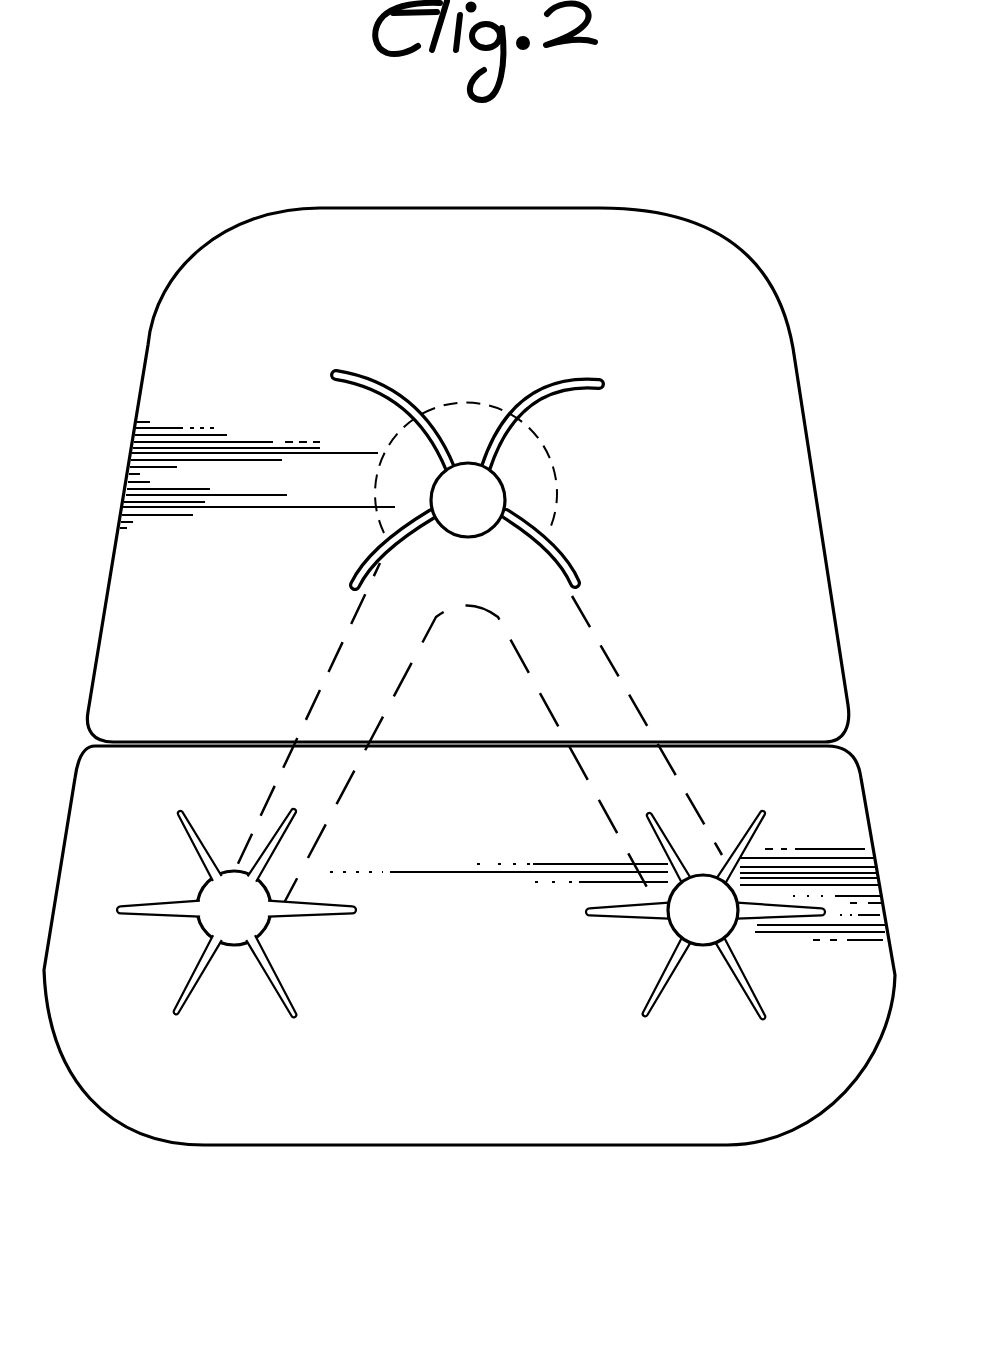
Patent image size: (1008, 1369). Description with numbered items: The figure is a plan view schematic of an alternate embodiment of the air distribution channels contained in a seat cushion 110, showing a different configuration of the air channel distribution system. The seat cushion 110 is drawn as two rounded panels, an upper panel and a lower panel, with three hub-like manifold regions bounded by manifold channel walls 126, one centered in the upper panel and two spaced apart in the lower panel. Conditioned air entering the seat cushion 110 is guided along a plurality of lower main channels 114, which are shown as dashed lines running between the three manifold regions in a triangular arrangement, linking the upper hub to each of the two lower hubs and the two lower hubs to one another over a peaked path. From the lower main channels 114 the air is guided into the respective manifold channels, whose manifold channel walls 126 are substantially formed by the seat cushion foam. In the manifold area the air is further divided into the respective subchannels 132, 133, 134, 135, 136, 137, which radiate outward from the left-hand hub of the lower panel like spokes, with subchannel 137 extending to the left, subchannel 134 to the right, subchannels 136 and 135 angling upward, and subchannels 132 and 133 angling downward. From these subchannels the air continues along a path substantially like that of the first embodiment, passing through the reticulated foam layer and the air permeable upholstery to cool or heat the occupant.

The seat cushion 110 is at (314, 1180).
The lower main channels 114 is at (340, 634).
The manifold channel walls 126 is at (505, 488).
The subchannel 132 is at (179, 1019).
The subchannel 133 is at (298, 1001).
The subchannel 134 is at (327, 918).
The subchannel 135 is at (296, 823).
The subchannel 136 is at (200, 823).
The subchannel 137 is at (146, 903).